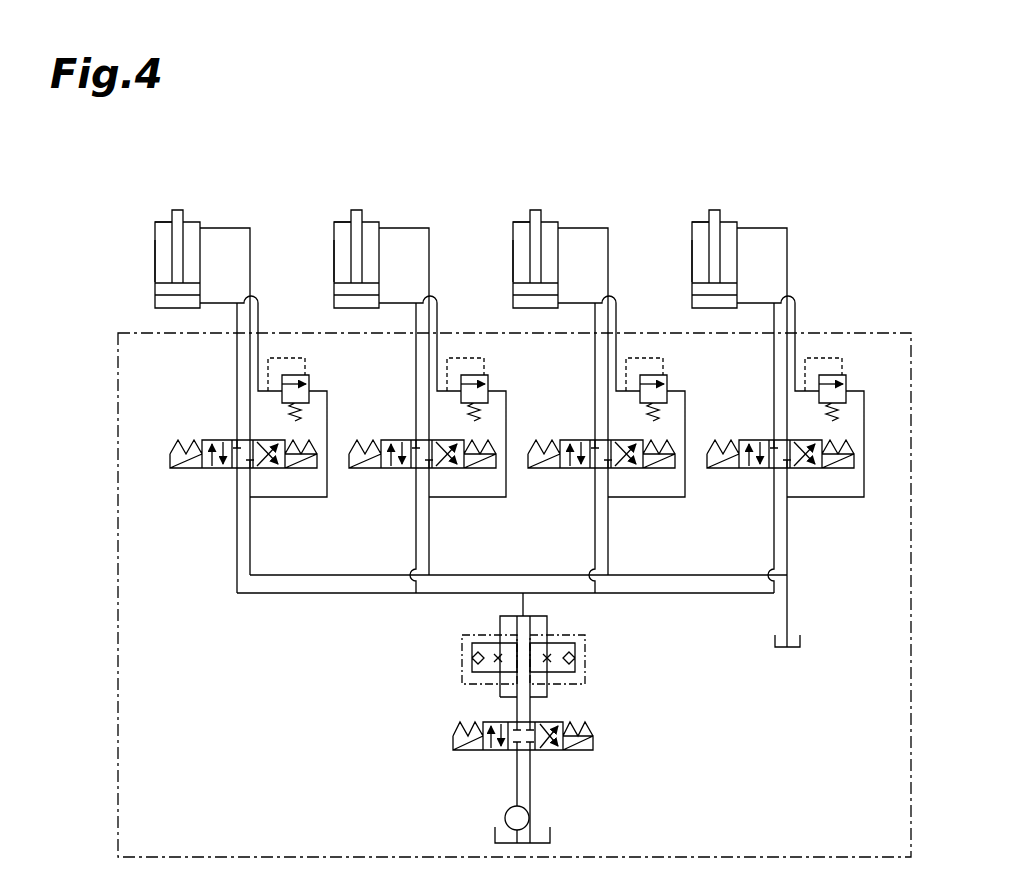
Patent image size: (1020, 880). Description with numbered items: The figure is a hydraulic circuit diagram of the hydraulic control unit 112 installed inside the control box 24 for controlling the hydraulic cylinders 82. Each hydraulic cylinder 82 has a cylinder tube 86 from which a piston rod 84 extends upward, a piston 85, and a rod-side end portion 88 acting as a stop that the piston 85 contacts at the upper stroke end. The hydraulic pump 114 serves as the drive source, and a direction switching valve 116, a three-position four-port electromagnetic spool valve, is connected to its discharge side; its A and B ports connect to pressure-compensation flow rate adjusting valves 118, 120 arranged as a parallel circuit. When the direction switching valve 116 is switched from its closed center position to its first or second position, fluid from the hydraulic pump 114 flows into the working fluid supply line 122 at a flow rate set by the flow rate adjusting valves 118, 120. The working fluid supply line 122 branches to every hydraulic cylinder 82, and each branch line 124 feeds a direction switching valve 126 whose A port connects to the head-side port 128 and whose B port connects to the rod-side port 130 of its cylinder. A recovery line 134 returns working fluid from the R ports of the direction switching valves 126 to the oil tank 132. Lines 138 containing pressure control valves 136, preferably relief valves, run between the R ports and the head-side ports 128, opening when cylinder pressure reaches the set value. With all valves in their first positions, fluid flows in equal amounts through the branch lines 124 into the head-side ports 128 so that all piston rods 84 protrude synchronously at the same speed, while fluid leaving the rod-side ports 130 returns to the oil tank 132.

The control box 24 is at (911, 381).
The hydraulic cylinder 82 is at (201, 262).
The piston rod 84 is at (177, 210).
The piston 85 is at (162, 288).
The cylinder tube 86 is at (155, 269).
The rod-side end portion 88 is at (155, 231).
The hydraulic control unit 112 is at (338, 724).
The hydraulic pump 114 is at (506, 813).
The direction switching valve 116 is at (566, 722).
The flow rate adjusting valve 118 is at (462, 658).
The flow rate adjusting valve 120 is at (585, 658).
The working fluid supply line 122 is at (530, 604).
The branch line 124 is at (311, 594).
The direction switching valve 126 is at (205, 470).
The head-side port 128 is at (201, 303).
The rod-side port 130 is at (201, 227).
The oil tank 132 is at (552, 836).
The recovery line 134 is at (312, 574).
The pressure control valve 136 is at (306, 376).
The line 138 is at (267, 357).